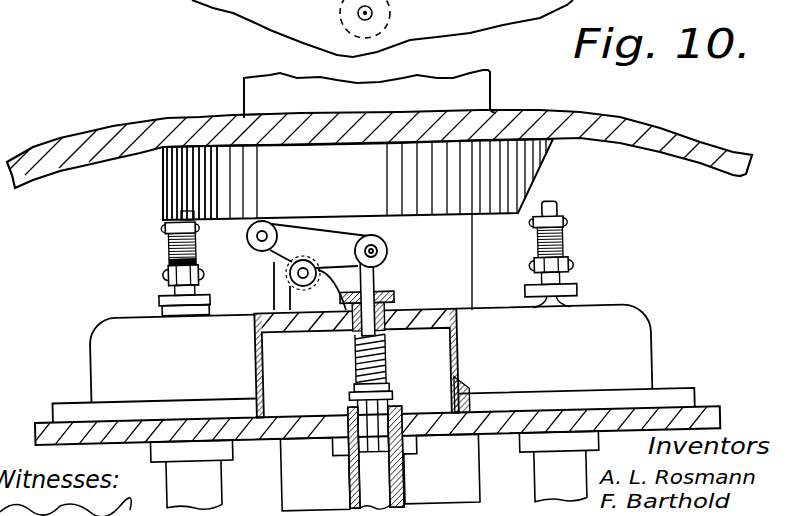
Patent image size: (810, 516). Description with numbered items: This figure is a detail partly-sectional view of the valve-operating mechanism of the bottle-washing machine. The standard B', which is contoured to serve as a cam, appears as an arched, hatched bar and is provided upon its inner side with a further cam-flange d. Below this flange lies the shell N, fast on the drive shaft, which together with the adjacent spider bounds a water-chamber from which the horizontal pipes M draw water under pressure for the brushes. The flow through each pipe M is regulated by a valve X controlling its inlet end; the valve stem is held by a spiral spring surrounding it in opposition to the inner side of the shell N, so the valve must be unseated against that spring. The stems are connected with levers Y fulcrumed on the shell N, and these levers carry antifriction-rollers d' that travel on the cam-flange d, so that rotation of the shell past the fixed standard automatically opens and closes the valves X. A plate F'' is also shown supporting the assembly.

The standard B' is at (376, 135).
The cam-flange d is at (335, 179).
The antifriction-rollers d' is at (358, 233).
The levers Y is at (173, 254).
The shell N is at (370, 353).
The valves X is at (393, 395).
The plate F'' is at (374, 445).
The horizontal pipes M is at (424, 476).